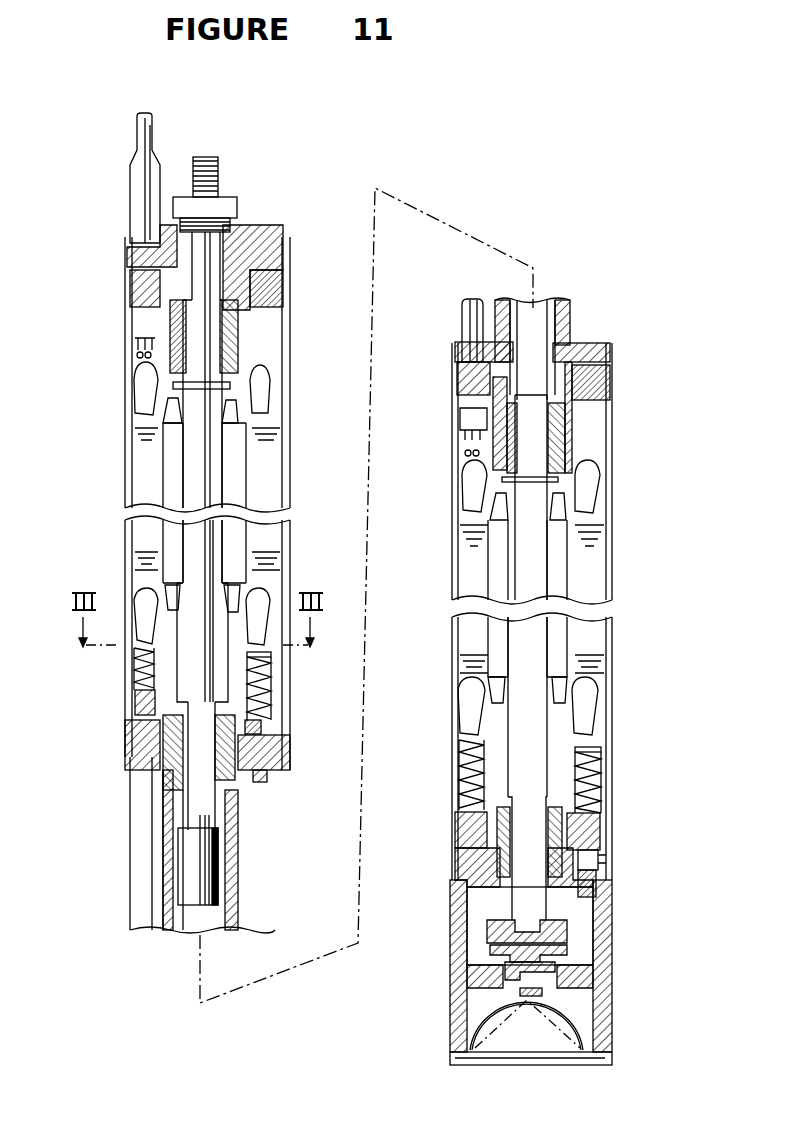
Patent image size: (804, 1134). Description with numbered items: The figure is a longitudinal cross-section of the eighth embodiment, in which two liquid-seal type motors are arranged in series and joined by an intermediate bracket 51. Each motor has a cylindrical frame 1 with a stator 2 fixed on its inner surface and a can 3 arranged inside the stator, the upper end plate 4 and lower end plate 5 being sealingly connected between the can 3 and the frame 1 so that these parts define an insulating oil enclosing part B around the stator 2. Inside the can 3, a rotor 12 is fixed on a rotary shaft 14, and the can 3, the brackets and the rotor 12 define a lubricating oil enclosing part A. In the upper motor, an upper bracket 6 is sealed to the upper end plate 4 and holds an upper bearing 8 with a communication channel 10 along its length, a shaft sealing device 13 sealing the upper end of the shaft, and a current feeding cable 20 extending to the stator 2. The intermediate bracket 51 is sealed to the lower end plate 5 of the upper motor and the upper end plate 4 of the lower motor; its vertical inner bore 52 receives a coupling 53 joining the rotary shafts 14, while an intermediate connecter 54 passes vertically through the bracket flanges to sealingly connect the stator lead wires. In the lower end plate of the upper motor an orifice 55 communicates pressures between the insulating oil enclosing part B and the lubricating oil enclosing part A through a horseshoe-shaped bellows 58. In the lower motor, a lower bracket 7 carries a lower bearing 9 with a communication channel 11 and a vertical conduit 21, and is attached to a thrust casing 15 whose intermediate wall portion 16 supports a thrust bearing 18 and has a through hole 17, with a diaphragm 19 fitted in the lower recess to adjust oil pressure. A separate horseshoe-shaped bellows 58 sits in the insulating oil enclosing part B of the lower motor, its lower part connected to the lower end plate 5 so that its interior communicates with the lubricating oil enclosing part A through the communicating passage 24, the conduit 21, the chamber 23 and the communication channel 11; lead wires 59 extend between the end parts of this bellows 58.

The cylindrical frame 1 is at (126, 545).
The stator 2 is at (145, 484).
The can 3 is at (162, 612).
The upper end plate 4 is at (131, 290).
The lower end plate 5 is at (126, 740).
The upper bracket 6 is at (130, 255).
The lower bracket 7 is at (480, 865).
The upper bearing 8 is at (238, 345).
The lower bearing 9 is at (238, 762).
The communication channel 10 is at (178, 322).
The communication channel 11 is at (126, 767).
The rotor 12 is at (172, 448).
The shaft sealing device 13 is at (227, 246).
The rotary shaft 14 is at (206, 457).
The thrust casing 15 is at (458, 914).
The intermediate wall portion 16 is at (500, 982).
The through hole 17 is at (571, 978).
The thrust bearing 18 is at (568, 945).
The diaphragm 19 is at (465, 1024).
The current feeding cable 20 is at (138, 192).
The conduit 21 is at (586, 858).
The chamber 23 is at (580, 917).
The communicating passage 24 is at (582, 823).
The intermediate bracket 51 is at (608, 344).
The inner bore 52 is at (224, 828).
The coupling 53 is at (210, 870).
The intermediate connecter 54 is at (125, 876).
The orifice 55 is at (262, 729).
The bellows 58 is at (273, 682).
The lead wires 59 is at (125, 655).
The lubricating oil enclosing part A is at (238, 390).
The insulating oil enclosing part B is at (133, 392).